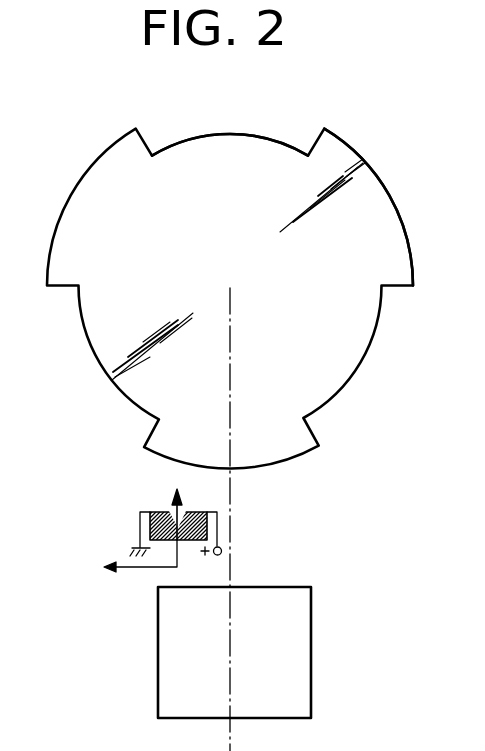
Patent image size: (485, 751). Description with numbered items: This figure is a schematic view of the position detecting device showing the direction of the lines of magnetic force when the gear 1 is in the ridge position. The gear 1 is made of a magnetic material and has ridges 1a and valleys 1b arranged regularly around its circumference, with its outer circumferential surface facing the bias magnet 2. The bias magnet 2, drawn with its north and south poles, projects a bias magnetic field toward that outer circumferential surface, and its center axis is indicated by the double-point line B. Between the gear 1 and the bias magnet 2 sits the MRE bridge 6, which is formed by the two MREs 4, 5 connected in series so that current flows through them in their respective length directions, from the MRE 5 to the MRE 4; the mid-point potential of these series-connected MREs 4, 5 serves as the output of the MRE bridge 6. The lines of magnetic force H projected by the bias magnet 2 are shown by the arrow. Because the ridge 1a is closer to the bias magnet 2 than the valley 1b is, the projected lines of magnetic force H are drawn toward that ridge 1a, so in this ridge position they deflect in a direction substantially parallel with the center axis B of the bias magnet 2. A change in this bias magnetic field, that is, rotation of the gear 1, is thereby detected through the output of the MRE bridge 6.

The gear 1 is at (286, 133).
The ridge 1a is at (412, 267).
The valley 1b is at (202, 135).
The bias magnet 2 is at (316, 644).
The MRE 4 is at (172, 513).
The MRE 5 is at (195, 512).
The MRE bridge 6 is at (131, 514).
The center axis of the bias magnet B is at (231, 327).
The magnetic force H is at (182, 541).